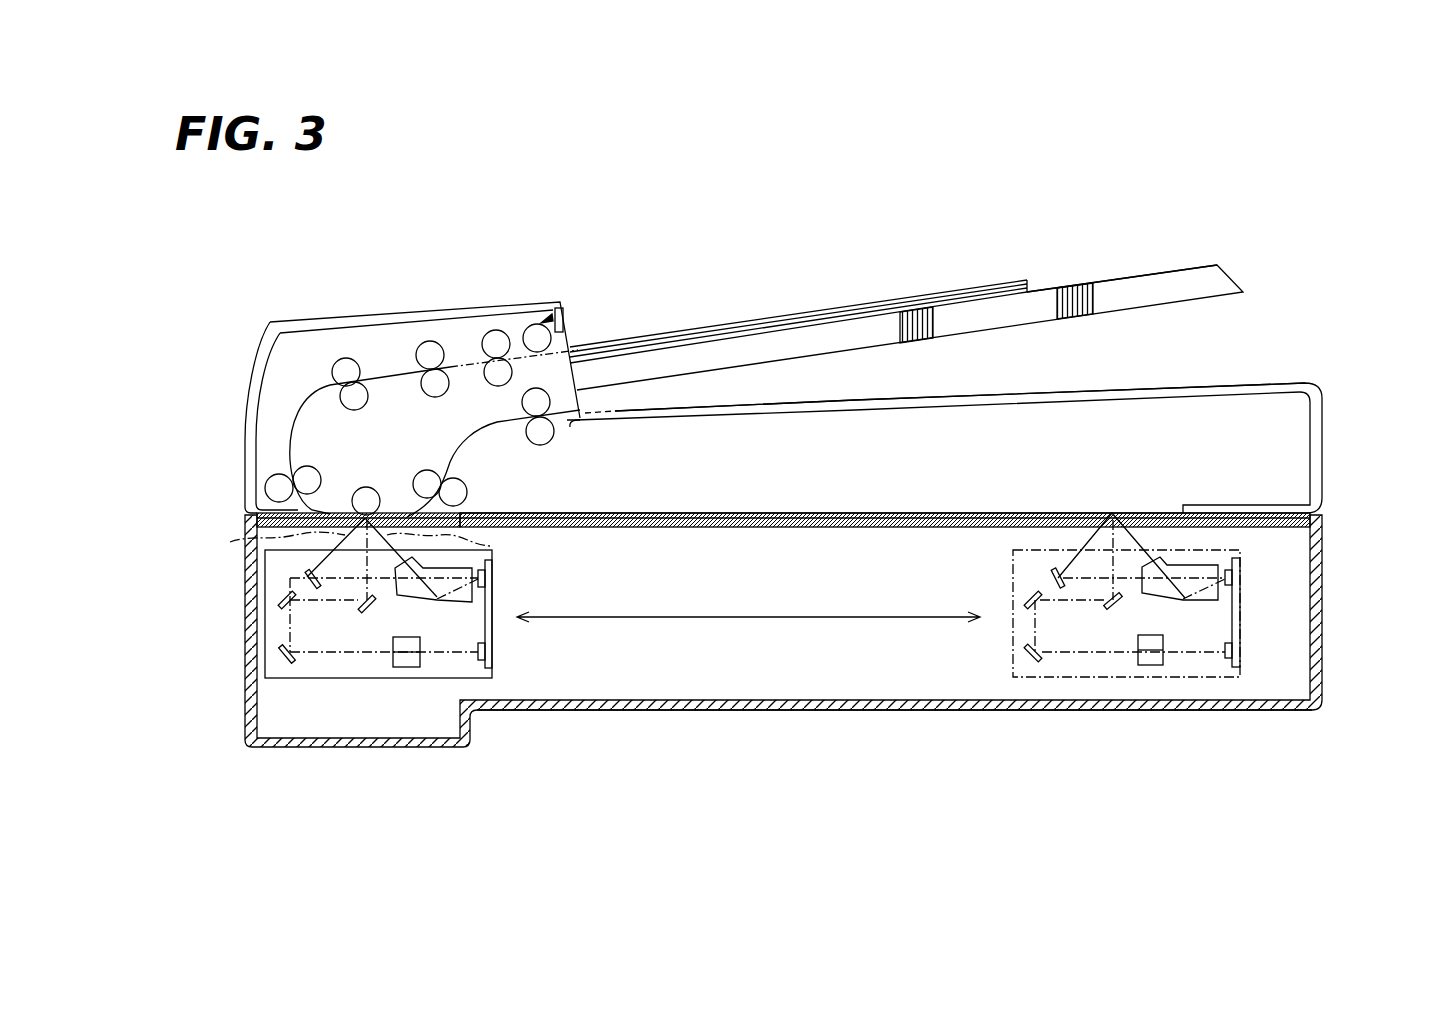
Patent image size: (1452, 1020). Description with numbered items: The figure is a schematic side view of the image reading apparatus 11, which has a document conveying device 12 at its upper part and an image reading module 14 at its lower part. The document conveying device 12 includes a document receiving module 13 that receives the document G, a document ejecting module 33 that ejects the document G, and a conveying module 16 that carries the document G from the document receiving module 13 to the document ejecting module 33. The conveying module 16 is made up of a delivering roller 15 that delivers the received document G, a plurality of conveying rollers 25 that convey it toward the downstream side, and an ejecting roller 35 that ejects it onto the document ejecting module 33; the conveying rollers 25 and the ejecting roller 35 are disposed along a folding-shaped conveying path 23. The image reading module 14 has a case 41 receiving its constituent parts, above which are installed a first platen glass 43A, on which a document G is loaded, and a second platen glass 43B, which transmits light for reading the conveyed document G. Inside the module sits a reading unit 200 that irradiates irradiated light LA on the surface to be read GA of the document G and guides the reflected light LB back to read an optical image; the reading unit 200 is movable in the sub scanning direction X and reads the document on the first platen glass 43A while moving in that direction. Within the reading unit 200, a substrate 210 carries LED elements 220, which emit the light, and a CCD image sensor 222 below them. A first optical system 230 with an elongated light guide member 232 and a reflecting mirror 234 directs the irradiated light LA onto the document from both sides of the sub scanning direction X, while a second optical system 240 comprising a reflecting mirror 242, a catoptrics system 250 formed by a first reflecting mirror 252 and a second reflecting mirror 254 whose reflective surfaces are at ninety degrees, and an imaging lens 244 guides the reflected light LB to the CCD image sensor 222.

The image reading apparatus 11 is at (1340, 266).
The document conveying device 12 is at (1340, 471).
The document receiving module 13 is at (1118, 298).
The image reading module 14 is at (1340, 623).
The delivering roller 15 is at (530, 326).
The conveying module 16 is at (563, 300).
The folding-shaped conveying path 23 is at (393, 363).
The conveying rollers 25 is at (487, 360).
The document ejecting module 33 is at (988, 392).
The ejecting roller 35 is at (547, 413).
The case 41 is at (585, 712).
The first platen glass 43A is at (912, 512).
The second platen glass 43B is at (392, 513).
The reading unit 200 is at (506, 599).
The substrate 210 is at (488, 629).
The LED elements 220 is at (487, 568).
The CCD image sensor 222 is at (487, 656).
The first optical system 230 is at (279, 584).
The light guide member 232 is at (453, 598).
The reflecting mirror 234 is at (338, 562).
The second optical system 240 is at (391, 676).
The reflecting mirror 242 is at (368, 610).
The imaging lens 244 is at (407, 662).
The catoptrics system 250 is at (264, 631).
The first reflecting mirror 252 is at (280, 600).
The second reflecting mirror 254 is at (280, 654).
The document G is at (770, 317).
The surface to be read GA is at (841, 310).
The irradiated light LA is at (240, 541).
The reflected light LB is at (375, 582).
The sub scanning direction X is at (752, 602).